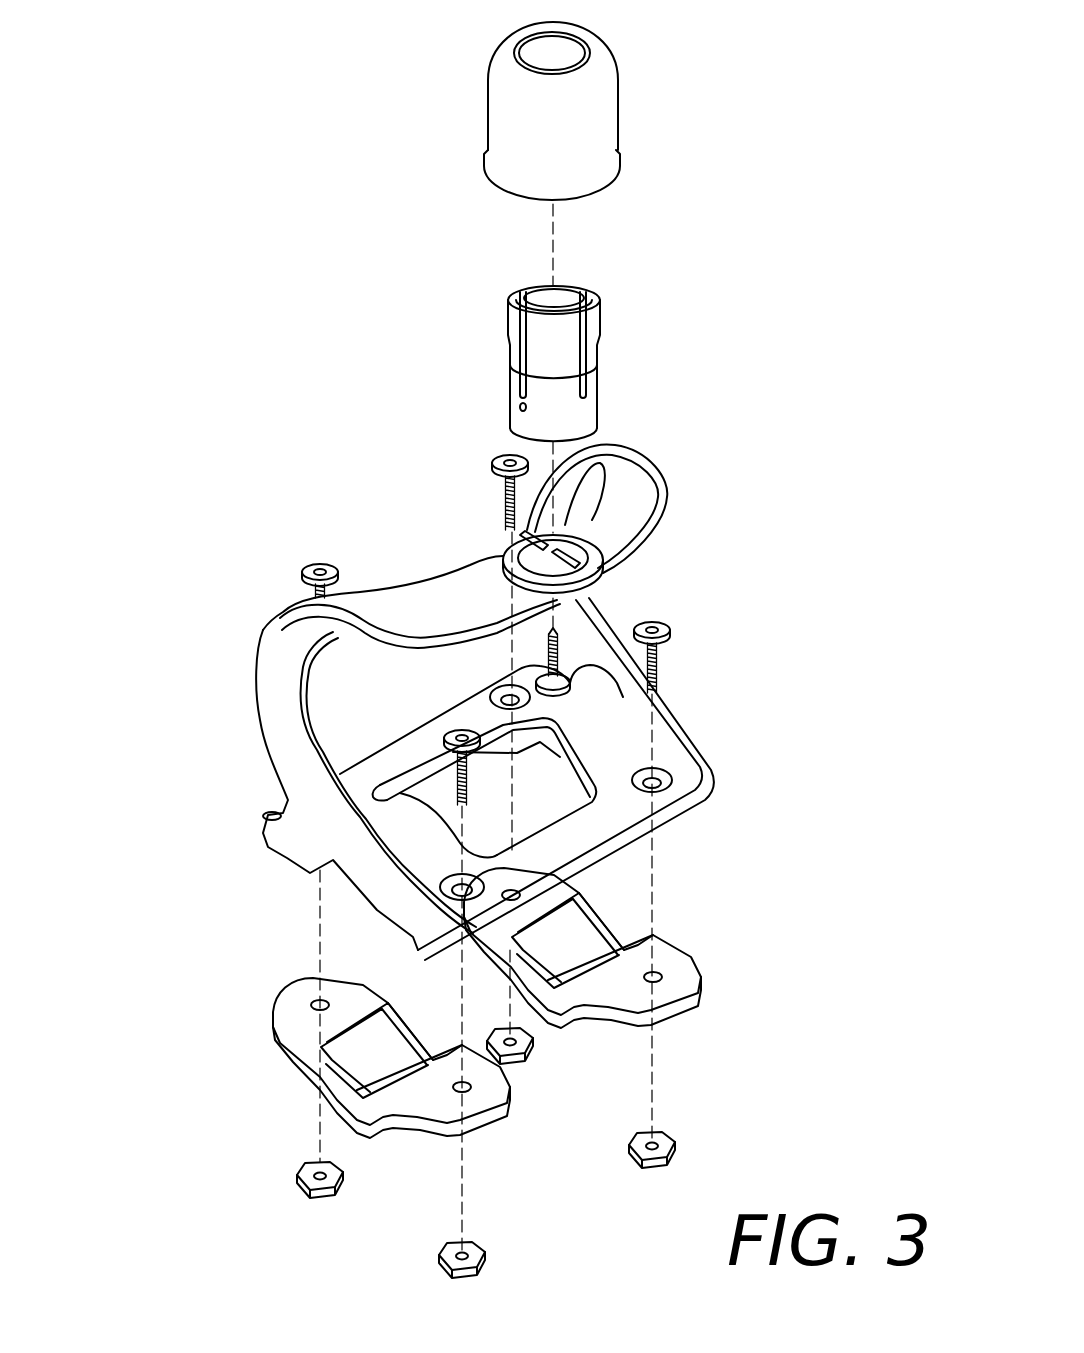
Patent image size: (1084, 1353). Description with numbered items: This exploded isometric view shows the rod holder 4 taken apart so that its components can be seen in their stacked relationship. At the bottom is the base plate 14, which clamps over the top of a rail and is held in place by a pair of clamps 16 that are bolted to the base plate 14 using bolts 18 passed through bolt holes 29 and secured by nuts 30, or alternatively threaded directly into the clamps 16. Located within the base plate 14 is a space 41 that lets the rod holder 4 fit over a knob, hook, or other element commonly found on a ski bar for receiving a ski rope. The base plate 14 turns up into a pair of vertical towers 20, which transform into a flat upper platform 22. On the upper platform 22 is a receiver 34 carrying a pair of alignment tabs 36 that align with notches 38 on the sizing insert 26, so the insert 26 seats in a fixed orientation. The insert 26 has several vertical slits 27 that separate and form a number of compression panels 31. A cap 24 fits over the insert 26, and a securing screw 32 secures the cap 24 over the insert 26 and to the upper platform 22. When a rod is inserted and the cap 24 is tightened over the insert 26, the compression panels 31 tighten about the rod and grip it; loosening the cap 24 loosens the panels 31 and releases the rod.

The rod holder 4 is at (162, 302).
The baseplate 14 is at (662, 810).
The clamps 16 is at (485, 1115).
The bolts 18 is at (462, 730).
The vertical towers 20 is at (265, 632).
The upper platform 22 is at (640, 533).
The cap 24 is at (585, 123).
The sizing insert 26 is at (583, 410).
The vertical slits 27 is at (597, 333).
The bolt holes 29 is at (460, 880).
The nuts 30 is at (440, 1250).
The compression panels 31 is at (545, 342).
The securing screw 32 is at (570, 688).
The receiver 34 is at (585, 555).
The alignment tabs 36 is at (548, 553).
The notches 38 is at (517, 407).
The space 41 is at (550, 783).